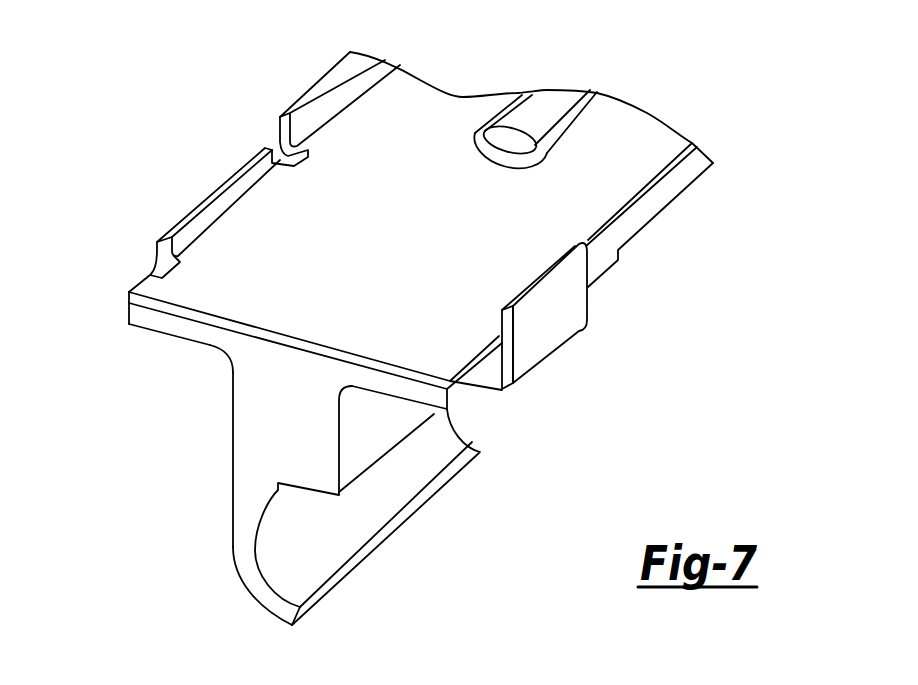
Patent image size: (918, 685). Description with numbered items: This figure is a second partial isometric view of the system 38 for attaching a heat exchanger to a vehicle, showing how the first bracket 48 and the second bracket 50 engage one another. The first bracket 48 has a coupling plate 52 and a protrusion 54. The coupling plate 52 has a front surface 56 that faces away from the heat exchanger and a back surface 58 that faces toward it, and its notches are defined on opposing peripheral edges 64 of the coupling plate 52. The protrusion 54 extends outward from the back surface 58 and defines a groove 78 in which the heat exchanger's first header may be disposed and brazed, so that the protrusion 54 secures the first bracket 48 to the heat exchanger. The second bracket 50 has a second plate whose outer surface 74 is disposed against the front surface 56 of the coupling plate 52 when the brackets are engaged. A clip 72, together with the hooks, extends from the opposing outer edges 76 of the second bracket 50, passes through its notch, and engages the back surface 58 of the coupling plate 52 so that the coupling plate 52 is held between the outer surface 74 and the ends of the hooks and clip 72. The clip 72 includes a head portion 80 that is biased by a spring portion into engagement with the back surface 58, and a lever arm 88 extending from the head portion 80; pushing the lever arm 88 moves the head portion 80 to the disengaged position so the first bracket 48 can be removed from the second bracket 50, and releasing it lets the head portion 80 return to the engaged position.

The system for attaching the heat exchanger to the vehicle 38 is at (238, 98).
The first bracket 48 is at (232, 471).
The second bracket 50 is at (695, 194).
The coupling plate 52 is at (126, 301).
The protrusion 54 is at (261, 603).
The front surface 56 is at (208, 327).
The back surface 58 is at (193, 345).
The opposing peripheral edges 64 is at (490, 392).
The clip 72 is at (571, 343).
The outer surface 74 is at (168, 311).
The opposing outer edges 76 is at (479, 458).
The groove 78 is at (334, 538).
The head portion 80 is at (480, 390).
The lever arm 88 is at (570, 303).